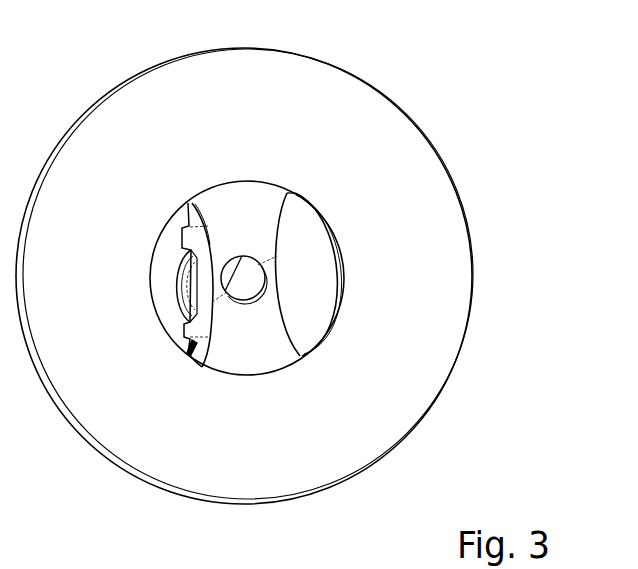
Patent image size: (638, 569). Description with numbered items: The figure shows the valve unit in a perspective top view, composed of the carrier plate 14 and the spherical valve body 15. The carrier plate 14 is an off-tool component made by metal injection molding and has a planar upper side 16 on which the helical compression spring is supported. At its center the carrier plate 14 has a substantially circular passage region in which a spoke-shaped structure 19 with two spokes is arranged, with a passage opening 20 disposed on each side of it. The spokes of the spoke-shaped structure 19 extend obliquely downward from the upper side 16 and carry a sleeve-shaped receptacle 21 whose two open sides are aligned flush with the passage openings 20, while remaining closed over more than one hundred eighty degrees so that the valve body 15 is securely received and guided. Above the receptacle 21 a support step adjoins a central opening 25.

The carrier plate 14 is at (303, 262).
The upper side 16 is at (318, 102).
The valve body 15 is at (178, 273).
The spoke-shaped structure 19 is at (300, 325).
The passage openings 20 is at (239, 280).
The sleeve-shaped receptacle 21 is at (185, 352).
The central opening 25 is at (238, 298).